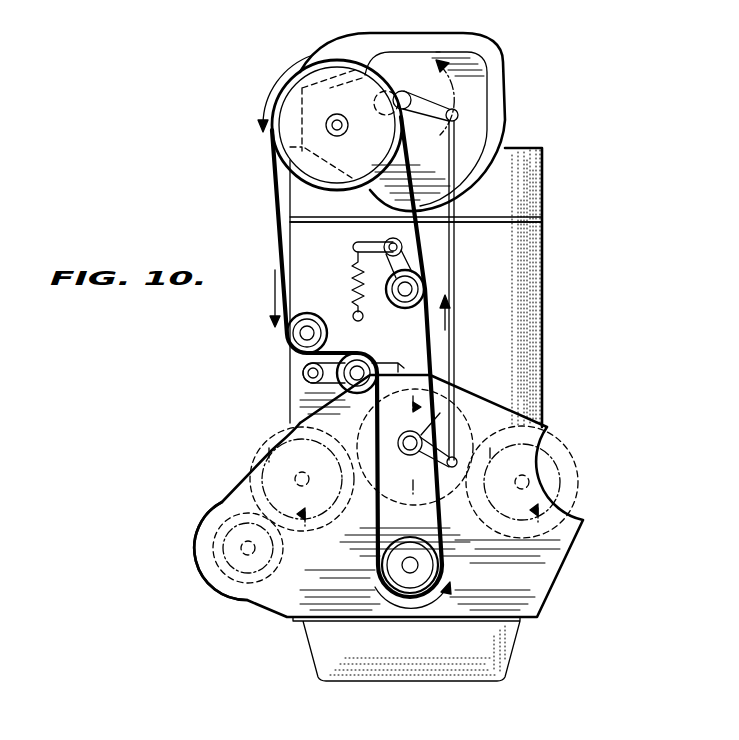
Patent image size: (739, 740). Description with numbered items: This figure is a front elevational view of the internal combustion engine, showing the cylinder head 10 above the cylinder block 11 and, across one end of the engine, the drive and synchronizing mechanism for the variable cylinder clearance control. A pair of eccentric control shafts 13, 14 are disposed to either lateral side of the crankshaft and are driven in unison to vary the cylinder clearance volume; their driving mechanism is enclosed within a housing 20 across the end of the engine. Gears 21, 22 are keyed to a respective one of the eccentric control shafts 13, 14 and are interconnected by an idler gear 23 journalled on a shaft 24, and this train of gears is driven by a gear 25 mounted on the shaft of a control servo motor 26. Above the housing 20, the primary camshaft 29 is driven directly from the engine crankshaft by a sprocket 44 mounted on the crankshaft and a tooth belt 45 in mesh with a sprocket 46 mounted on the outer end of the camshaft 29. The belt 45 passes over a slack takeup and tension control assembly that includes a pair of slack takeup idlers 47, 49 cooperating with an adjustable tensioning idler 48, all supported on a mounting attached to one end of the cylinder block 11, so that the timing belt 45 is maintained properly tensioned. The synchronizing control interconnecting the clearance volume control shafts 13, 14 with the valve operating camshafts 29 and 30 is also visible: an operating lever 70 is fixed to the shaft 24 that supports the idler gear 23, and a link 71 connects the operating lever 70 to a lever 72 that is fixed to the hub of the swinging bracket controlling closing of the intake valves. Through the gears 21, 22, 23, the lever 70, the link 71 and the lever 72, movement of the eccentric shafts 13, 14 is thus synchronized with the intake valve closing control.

The cylinder head 10 is at (545, 180).
The cylinder block 11 is at (545, 307).
The eccentric control shaft 13 is at (243, 485).
The eccentric control shaft 14 is at (530, 478).
The housing 20 is at (548, 427).
The gear 21 is at (258, 447).
The gear 22 is at (570, 522).
The idler gear 23 is at (478, 412).
The shaft 24 is at (440, 413).
The gear 25 is at (265, 603).
The control servo motor 26 is at (208, 582).
The primary camshaft 29 is at (345, 135).
The camshaft 30 is at (403, 92).
The sprocket 44 is at (380, 562).
The tooth belt 45 is at (278, 205).
The sprocket 46 is at (276, 140).
The slack takeup idler 47 is at (287, 347).
The adjustable tensioning idler 48 is at (396, 308).
The slack takeup idler 49 is at (300, 396).
The operating lever 70 is at (422, 453).
The link 71 is at (456, 255).
The lever 72 is at (458, 115).